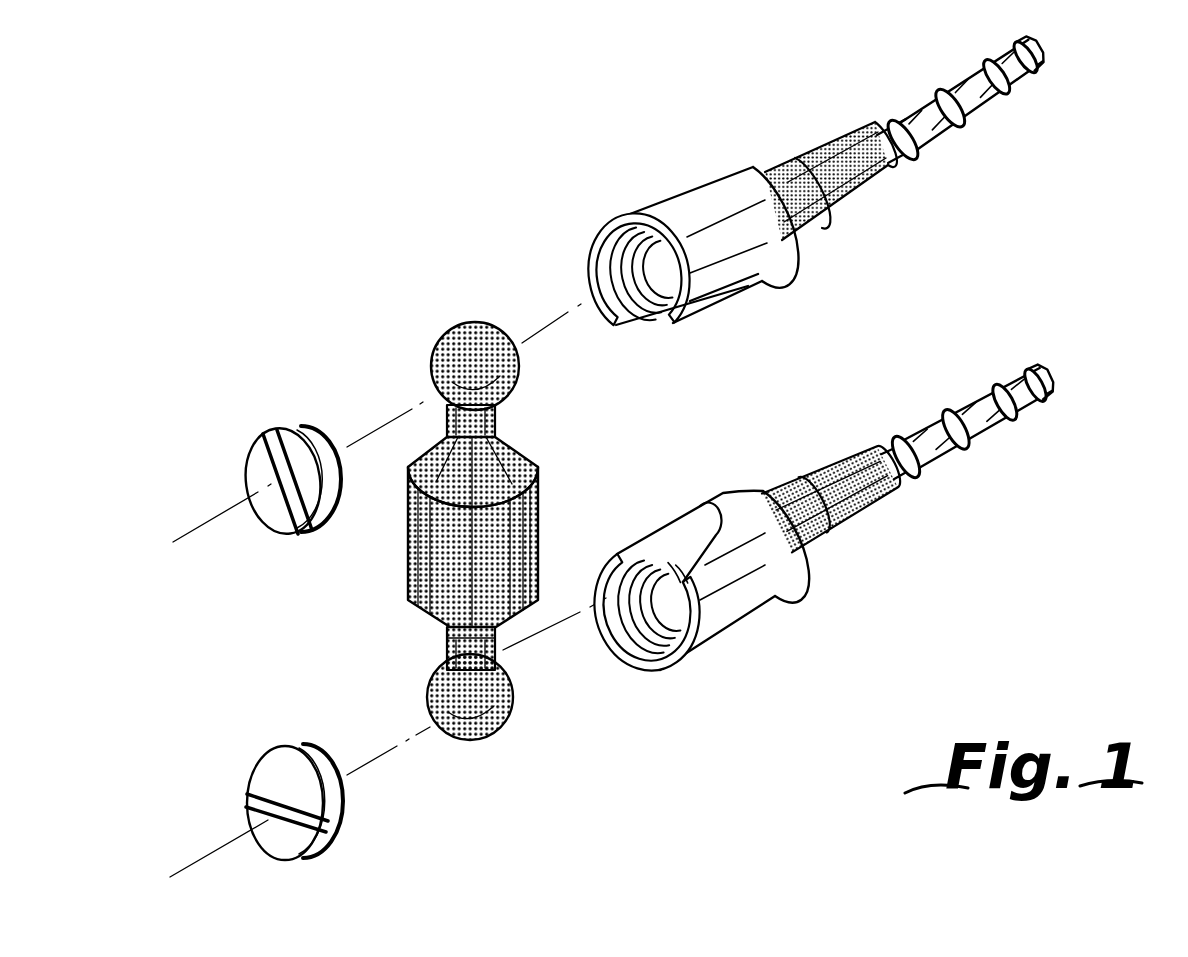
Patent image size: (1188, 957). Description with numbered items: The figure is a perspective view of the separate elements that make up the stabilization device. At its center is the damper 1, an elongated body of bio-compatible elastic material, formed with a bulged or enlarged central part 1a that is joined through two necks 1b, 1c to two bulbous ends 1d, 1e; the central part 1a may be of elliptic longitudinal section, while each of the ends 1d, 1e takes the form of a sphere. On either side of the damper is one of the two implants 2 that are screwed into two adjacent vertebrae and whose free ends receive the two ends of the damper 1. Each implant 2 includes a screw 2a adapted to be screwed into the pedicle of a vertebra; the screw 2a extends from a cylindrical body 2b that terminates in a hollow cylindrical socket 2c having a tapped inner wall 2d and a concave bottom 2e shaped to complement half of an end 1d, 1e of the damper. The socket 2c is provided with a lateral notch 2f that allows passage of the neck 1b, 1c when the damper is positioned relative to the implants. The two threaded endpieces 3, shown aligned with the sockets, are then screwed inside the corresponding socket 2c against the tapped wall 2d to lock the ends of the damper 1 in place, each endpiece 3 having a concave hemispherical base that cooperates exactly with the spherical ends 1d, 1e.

The damper 1 is at (377, 590).
The bulged central part 1a is at (508, 538).
The neck 1b is at (496, 416).
The neck 1c is at (497, 650).
The bulbous end 1d is at (462, 325).
The bulbous end 1e is at (486, 724).
The implant 2 is at (760, 130).
The screw 2a is at (1017, 88).
The cylindrical body 2b is at (853, 172).
The hollow socket 2c is at (740, 263).
The tapped inner wall 2d is at (626, 251).
The concave bottom 2e is at (670, 277).
The lateral notch 2f is at (641, 326).
The threaded endpiece 3 is at (258, 468).